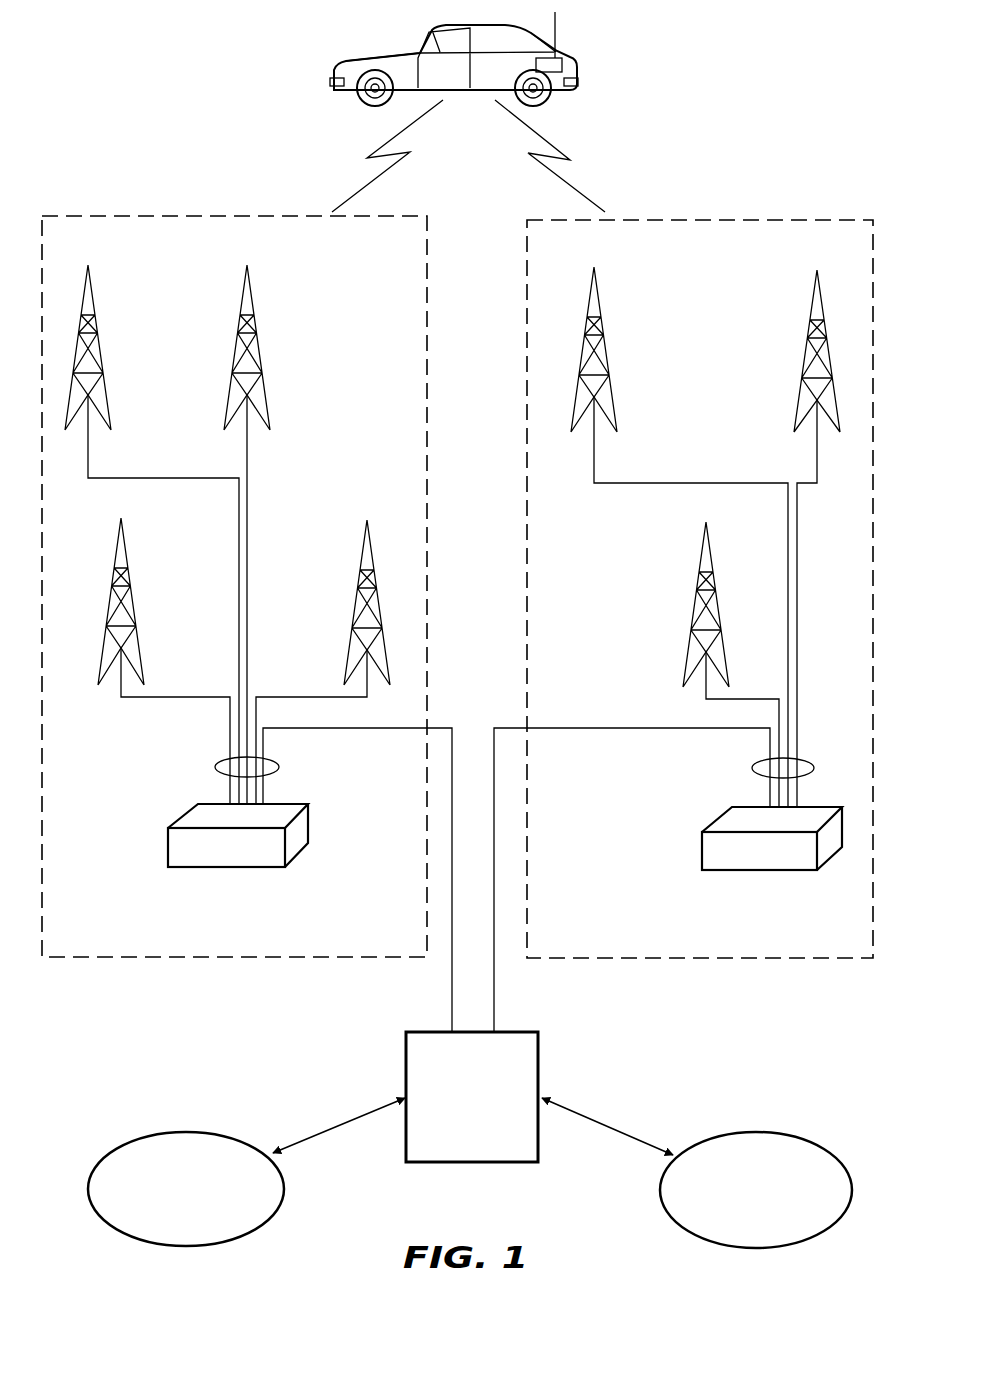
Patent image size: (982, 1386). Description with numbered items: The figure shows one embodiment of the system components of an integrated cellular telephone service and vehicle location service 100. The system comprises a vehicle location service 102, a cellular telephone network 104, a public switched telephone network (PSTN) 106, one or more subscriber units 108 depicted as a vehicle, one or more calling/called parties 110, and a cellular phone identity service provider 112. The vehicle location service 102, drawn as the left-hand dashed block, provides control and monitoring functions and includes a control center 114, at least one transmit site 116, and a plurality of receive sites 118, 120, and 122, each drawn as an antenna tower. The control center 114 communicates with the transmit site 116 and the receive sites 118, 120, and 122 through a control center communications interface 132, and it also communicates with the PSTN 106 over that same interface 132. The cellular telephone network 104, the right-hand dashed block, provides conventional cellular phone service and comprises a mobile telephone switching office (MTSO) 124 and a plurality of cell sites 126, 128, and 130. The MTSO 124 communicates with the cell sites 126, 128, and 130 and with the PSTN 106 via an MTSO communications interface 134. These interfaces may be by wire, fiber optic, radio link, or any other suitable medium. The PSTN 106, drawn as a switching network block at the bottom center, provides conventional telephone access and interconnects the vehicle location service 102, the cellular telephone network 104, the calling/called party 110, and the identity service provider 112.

The integrated cellular telephone service and vehicle location service 100 is at (165, 105).
The vehicle location service 102 is at (160, 214).
The cellular telephone network 104 is at (752, 218).
The public switched telephone network (PSTN) 106 is at (538, 1063).
The subscriber unit 108 is at (573, 64).
The calling/called party 110 is at (162, 1133).
The cellular phone identity service provider 112 is at (742, 1133).
The control center 114 is at (168, 838).
The transmit site 116 is at (360, 558).
The receive site 118 is at (95, 315).
The receive site 120 is at (258, 310).
The receive site 122 is at (112, 580).
The mobile telephone switching office (MTSO) 124 is at (702, 857).
The cell site 126 is at (693, 632).
The cell site 128 is at (604, 327).
The cell site 130 is at (806, 340).
The control center communications interface 132 is at (279, 767).
The MTSO communications interface 134 is at (752, 768).